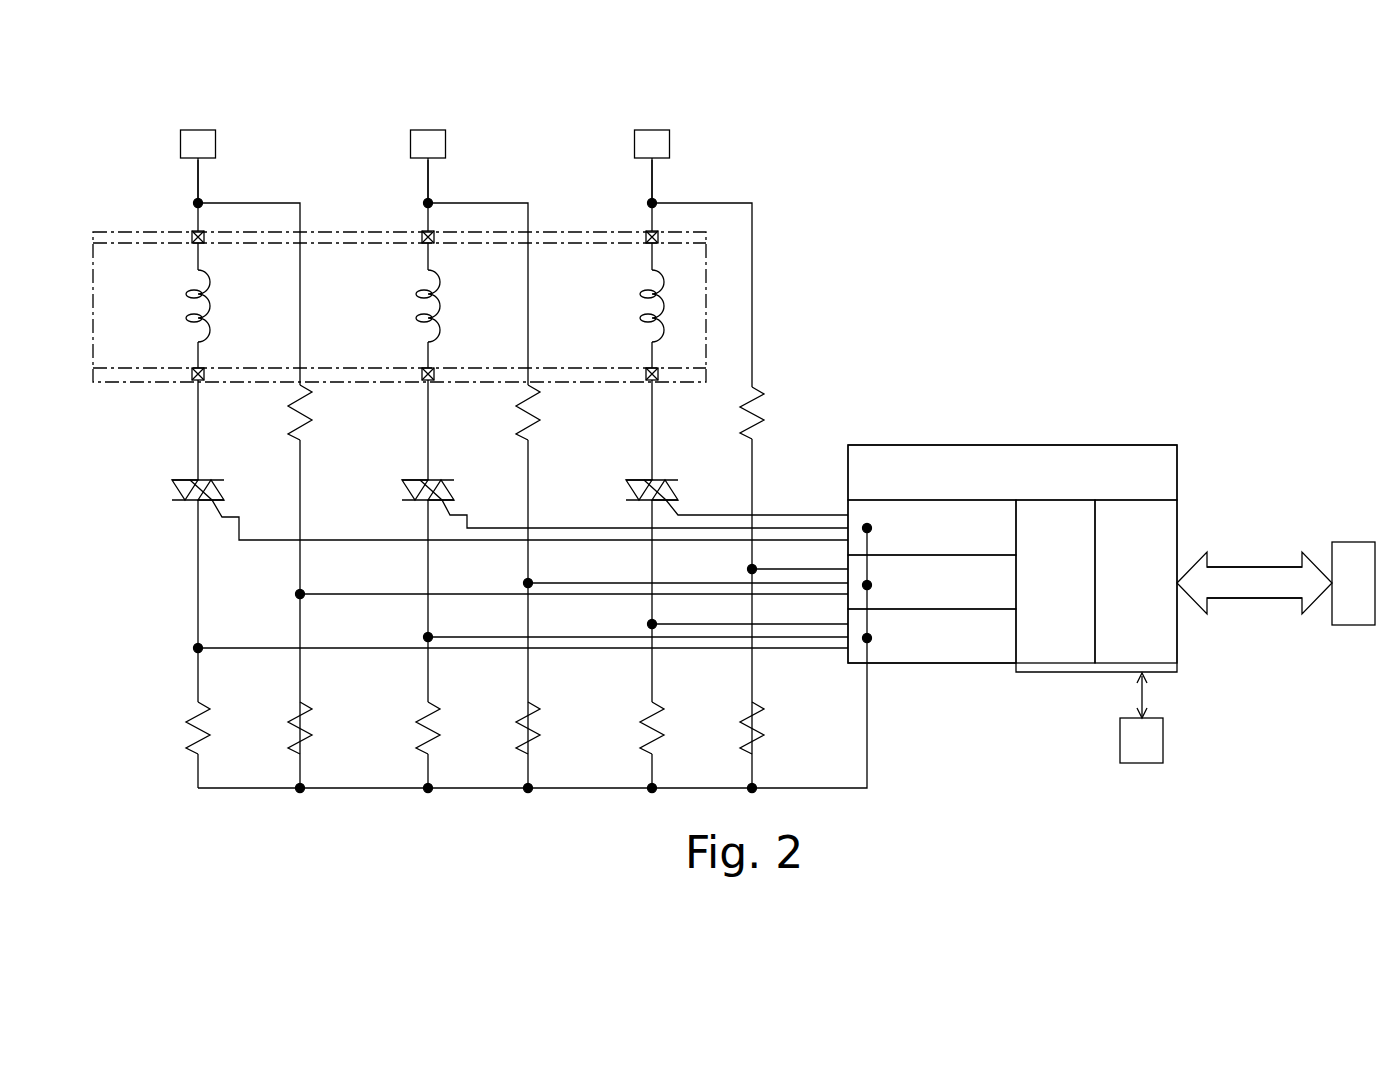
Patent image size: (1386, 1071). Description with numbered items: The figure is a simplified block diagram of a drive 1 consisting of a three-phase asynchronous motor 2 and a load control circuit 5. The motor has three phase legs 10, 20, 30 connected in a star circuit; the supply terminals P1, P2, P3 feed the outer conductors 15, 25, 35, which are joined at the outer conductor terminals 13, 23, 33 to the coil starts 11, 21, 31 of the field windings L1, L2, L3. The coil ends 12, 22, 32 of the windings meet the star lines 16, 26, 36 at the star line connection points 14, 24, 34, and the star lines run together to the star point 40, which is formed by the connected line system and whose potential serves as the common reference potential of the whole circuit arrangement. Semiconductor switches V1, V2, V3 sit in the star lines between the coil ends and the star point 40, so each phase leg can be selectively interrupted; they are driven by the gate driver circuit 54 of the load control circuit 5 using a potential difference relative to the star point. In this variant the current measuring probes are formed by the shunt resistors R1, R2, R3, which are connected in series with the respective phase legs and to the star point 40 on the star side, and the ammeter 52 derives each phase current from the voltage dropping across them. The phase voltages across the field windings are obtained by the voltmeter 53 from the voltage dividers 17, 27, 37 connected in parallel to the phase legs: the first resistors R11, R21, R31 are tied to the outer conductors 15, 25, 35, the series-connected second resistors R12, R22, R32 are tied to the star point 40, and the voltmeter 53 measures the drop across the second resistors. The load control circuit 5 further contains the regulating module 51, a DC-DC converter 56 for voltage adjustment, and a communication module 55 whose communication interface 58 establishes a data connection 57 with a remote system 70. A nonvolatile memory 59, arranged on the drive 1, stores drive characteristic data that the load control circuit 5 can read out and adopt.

The drive 1 is at (1082, 324).
The three-phase asynchronous motor 2 is at (583, 255).
The load control circuit 5 is at (1012, 513).
The first phase leg 10 is at (183, 180).
The second phase leg 20 is at (410, 178).
The third phase leg 30 is at (635, 178).
The first phase terminal P1 is at (198, 144).
The second phase terminal P2 is at (428, 144).
The third phase terminal P3 is at (652, 144).
The first outer conductor 15 is at (200, 178).
The second outer conductor 25 is at (430, 178).
The third outer conductor 35 is at (654, 178).
The first outer conductor terminal 13 is at (195, 232).
The second outer conductor terminal 23 is at (423, 232).
The third outer conductor terminal 33 is at (648, 230).
The coil start of first field winding 11 is at (207, 273).
The coil start of second field winding 21 is at (437, 273).
The coil start of third field winding 31 is at (661, 273).
The first field winding L1 is at (195, 300).
The second field winding L2 is at (425, 300).
The third field winding L3 is at (649, 300).
The coil end of first field winding 12 is at (202, 342).
The coil end of second field winding 22 is at (432, 342).
The coil end of third field winding 32 is at (656, 342).
The first star line connection point 14 is at (195, 383).
The second star line connection point 24 is at (425, 383).
The third star line connection point 34 is at (649, 383).
The first star line 16 is at (198, 443).
The second star line 26 is at (428, 443).
The third star line 36 is at (652, 443).
The first voltage divider 17 is at (298, 330).
The second voltage divider 27 is at (526, 330).
The third voltage divider 37 is at (753, 297).
The first semiconductor switch V1 is at (215, 478).
The second semiconductor switch V2 is at (445, 478).
The third semiconductor switch V3 is at (670, 478).
The first resistor of first voltage divider R11 is at (292, 447).
The first resistor of second voltage divider R21 is at (524, 447).
The first resistor of third voltage divider R31 is at (760, 438).
The first shunt resistor R1 is at (207, 720).
The second resistor of first voltage divider R12 is at (305, 720).
The second shunt resistor R2 is at (435, 720).
The second resistor of second voltage divider R22 is at (535, 720).
The third shunt resistor R3 is at (659, 720).
The second resistor of third voltage divider R32 is at (759, 720).
The star point 40 is at (259, 790).
The regulating module 51 is at (1055, 581).
The ammeter 52 is at (932, 636).
The voltmeter 53 is at (932, 582).
The gate driver circuit 54 is at (932, 527).
The communication module 55 is at (1136, 581).
The DC-DC converter 56 is at (1012, 472).
The data connection 57 is at (1275, 583).
The communication interface 58 is at (1182, 546).
The nonvolatile memory 59 is at (1141, 718).
The remote system 70 is at (1353, 583).